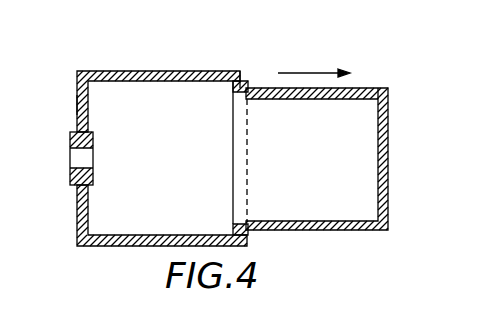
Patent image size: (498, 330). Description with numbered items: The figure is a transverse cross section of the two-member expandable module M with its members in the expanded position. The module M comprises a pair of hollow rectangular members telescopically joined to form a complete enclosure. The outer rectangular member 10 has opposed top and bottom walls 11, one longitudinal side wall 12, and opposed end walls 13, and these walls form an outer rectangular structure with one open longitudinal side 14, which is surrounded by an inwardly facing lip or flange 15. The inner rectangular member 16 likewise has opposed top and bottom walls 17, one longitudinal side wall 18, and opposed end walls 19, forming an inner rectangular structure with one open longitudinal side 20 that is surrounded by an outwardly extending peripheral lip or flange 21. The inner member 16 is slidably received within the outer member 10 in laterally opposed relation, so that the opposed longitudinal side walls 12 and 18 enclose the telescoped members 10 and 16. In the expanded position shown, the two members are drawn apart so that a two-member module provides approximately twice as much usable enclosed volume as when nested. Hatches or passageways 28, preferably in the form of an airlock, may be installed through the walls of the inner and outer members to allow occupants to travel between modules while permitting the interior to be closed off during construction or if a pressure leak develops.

The outer rectangular member 10 is at (128, 71).
The top and bottom walls 11 is at (150, 71).
The longitudinal side wall 12 is at (77, 104).
The end walls 13 is at (163, 181).
The open longitudinal side 14 is at (248, 184).
The inwardly facing lip or flange 15 is at (248, 82).
The inner rectangular member 16 is at (266, 88).
The top and bottom walls 17 is at (318, 100).
The longitudinal side wall 18 is at (387, 96).
The end walls 19 is at (308, 174).
The open longitudinal side 20 is at (229, 102).
The outwardly extending peripheral lip or flange 21 is at (232, 223).
The hatches or passageways 28 is at (94, 136).
The expandable module M is at (197, 44).